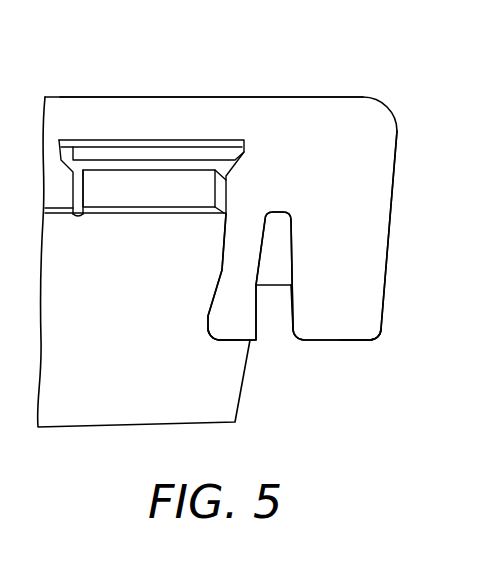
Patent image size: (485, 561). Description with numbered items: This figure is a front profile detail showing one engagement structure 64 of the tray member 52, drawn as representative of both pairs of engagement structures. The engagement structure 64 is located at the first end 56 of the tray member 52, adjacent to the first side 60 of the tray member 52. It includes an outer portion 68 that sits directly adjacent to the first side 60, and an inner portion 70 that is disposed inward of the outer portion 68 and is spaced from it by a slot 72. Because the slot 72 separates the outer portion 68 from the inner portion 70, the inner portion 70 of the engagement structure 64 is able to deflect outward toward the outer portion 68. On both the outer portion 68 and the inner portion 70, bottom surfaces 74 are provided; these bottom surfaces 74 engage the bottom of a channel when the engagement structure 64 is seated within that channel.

The tray member 52 is at (178, 62).
The first end 56 is at (318, 108).
The first side 60 is at (392, 218).
The engagement structure 64 is at (325, 416).
The outer portion 68 is at (374, 296).
The inner portion 70 is at (214, 279).
The slot 72 is at (272, 344).
The bottom surfaces 74 is at (222, 342).